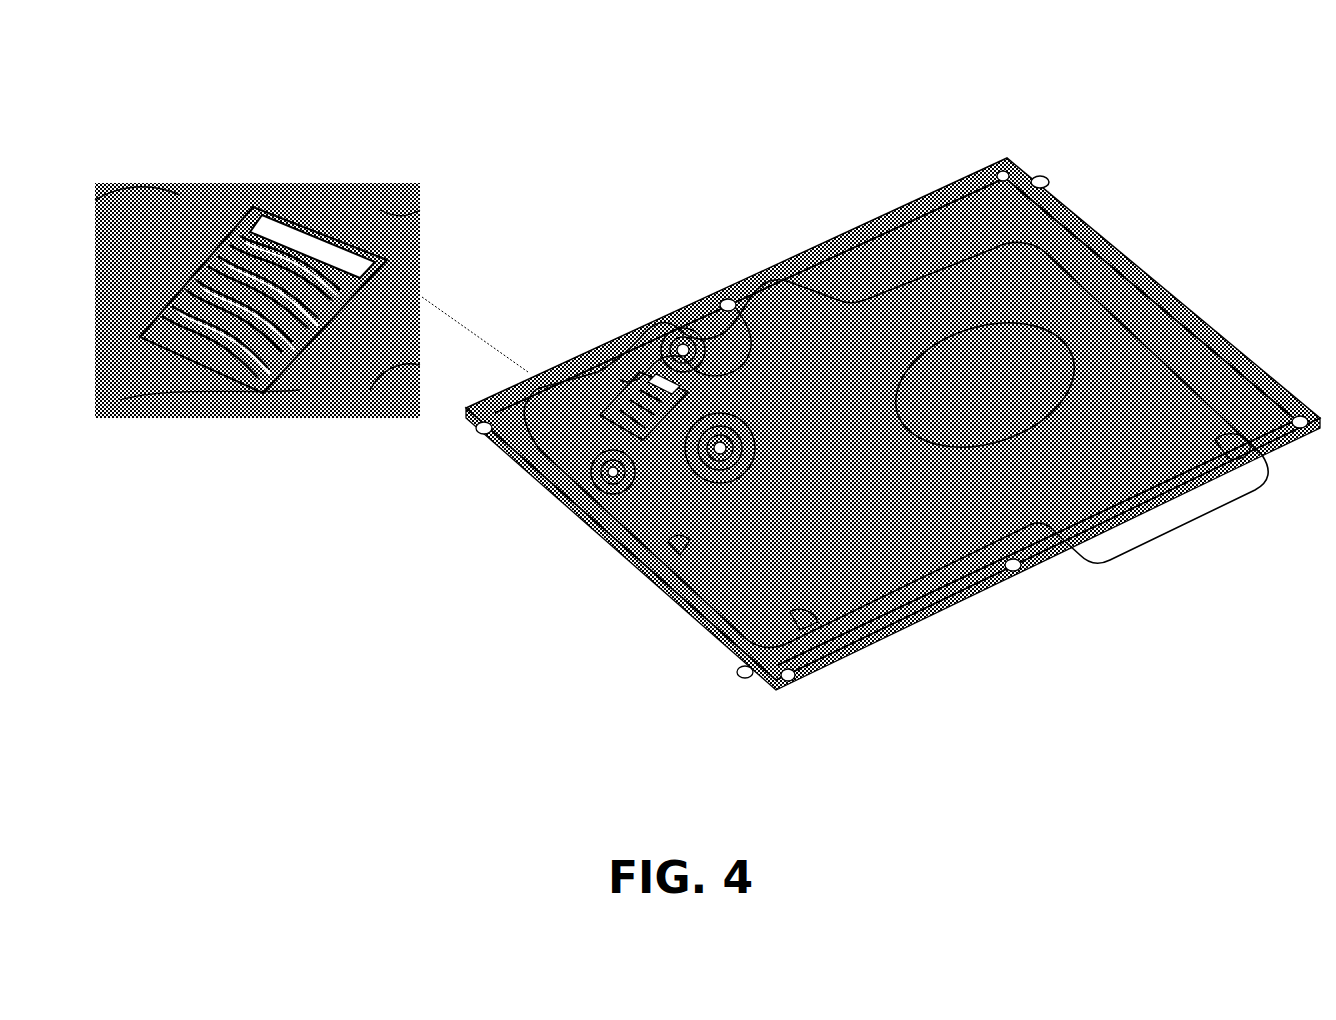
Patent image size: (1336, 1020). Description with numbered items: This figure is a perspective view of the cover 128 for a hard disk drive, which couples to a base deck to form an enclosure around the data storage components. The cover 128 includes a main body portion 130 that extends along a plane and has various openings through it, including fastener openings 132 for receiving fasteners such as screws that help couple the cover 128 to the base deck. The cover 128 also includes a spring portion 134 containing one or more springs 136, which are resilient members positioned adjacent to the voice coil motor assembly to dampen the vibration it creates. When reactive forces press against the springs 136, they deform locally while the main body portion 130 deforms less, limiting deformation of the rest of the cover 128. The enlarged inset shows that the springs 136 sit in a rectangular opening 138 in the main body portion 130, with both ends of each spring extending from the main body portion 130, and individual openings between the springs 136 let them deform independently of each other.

The cover 128 is at (515, 88).
The main body portion 130 is at (826, 283).
The fastener openings 132 is at (1040, 180).
The spring portion 134 is at (188, 200).
The springs 136 is at (263, 240).
The opening 138 is at (348, 243).